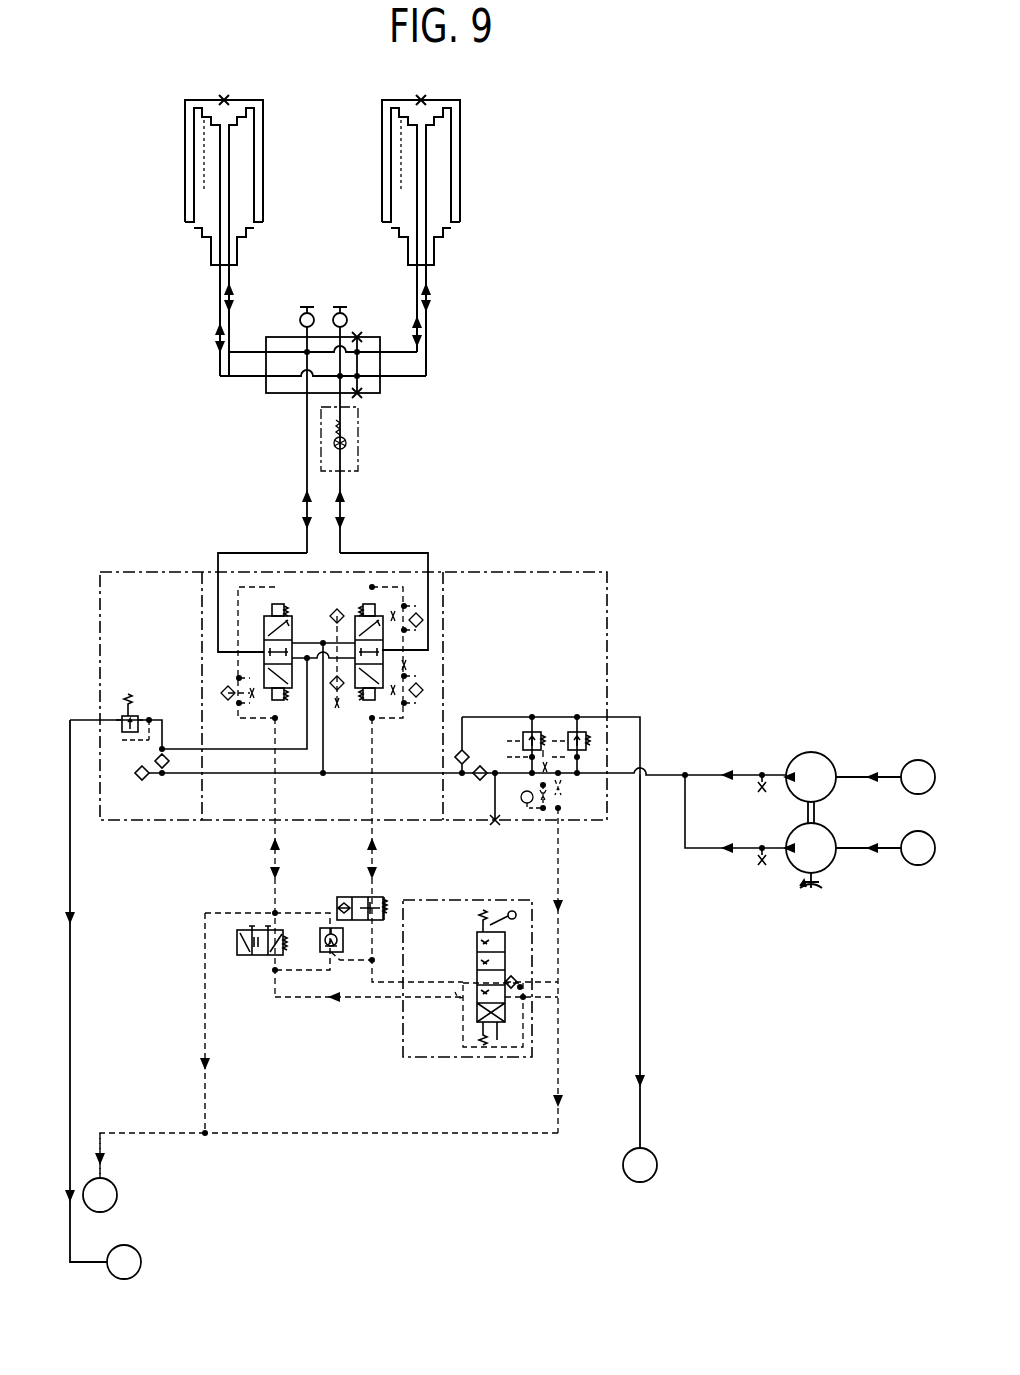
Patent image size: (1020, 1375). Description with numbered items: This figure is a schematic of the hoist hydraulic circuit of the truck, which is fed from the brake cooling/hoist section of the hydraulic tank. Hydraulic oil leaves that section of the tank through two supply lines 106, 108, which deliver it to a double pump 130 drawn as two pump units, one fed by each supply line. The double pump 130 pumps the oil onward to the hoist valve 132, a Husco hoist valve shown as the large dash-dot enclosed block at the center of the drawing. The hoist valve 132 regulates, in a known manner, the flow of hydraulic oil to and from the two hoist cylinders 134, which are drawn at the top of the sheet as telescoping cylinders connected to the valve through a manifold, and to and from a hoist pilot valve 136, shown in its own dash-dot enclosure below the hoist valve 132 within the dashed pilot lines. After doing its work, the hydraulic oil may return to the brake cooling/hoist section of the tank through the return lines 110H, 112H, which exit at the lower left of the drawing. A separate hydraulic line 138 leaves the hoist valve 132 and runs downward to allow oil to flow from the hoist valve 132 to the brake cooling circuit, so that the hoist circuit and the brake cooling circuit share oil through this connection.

The hoist cylinders 134 is at (202, 137).
The hoist valve 132 is at (428, 823).
The double pump 130 is at (810, 752).
The supply line 106 is at (847, 770).
The supply line 108 is at (850, 852).
The hoist pilot valve 136 is at (466, 1009).
The hydraulic line 138 is at (641, 977).
The return line 110H is at (150, 1134).
The return line 112H is at (66, 1240).